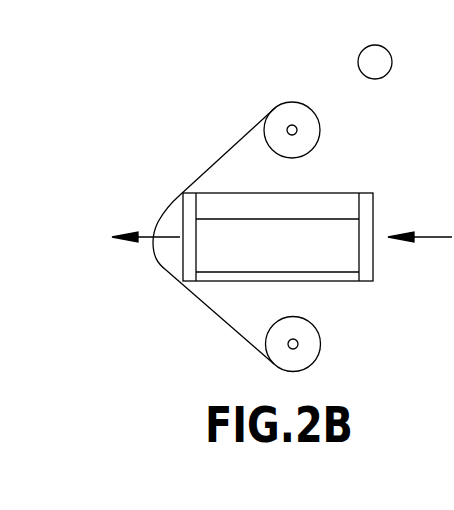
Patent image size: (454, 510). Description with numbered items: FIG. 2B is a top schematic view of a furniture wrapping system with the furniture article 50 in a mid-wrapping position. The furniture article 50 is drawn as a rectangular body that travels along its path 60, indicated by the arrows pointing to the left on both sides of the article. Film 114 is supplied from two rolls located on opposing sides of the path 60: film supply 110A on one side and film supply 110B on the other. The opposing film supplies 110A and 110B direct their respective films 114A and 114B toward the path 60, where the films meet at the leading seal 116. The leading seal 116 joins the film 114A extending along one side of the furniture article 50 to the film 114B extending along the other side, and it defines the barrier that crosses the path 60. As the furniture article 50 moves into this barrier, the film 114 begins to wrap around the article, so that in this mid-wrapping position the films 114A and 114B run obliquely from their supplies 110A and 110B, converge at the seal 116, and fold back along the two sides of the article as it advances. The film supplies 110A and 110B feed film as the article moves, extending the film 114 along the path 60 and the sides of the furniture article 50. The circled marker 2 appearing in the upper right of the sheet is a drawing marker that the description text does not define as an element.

The object / sheet being cut 50 is at (323, 207).
The second pulley 110B is at (285, 112).
The first pulley 110A is at (308, 342).
The belt 114 is at (175, 229).
The belt lower run 114A is at (209, 310).
The belt upper run 114B is at (220, 155).
The belt apex / cutting edge 116 is at (152, 254).
The direction of travel 60 is at (152, 236).
The view indicator 2 is at (375, 62).